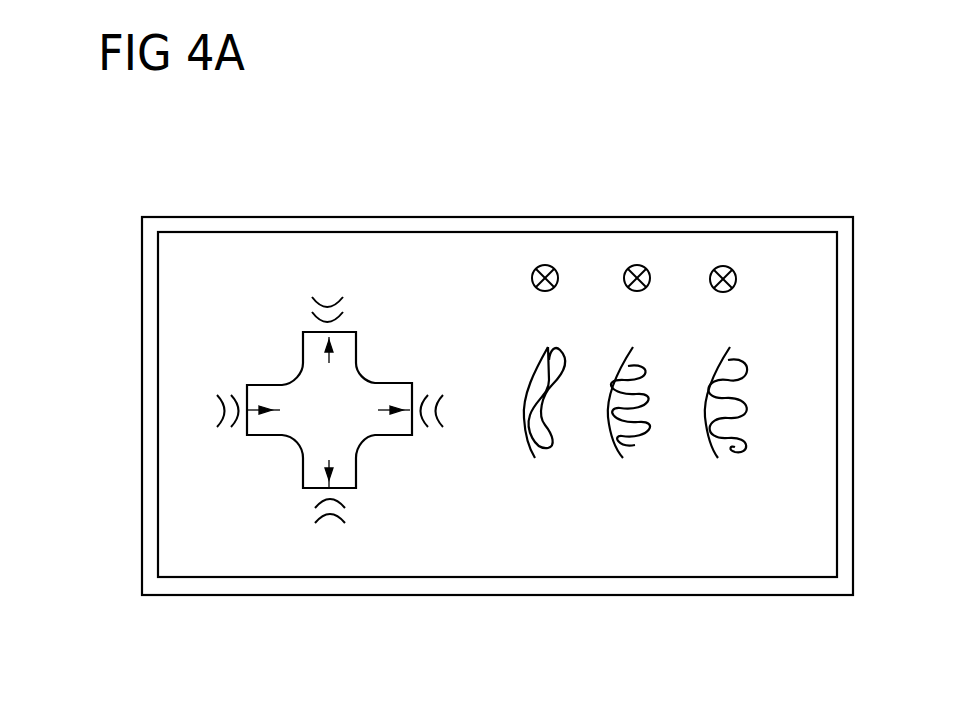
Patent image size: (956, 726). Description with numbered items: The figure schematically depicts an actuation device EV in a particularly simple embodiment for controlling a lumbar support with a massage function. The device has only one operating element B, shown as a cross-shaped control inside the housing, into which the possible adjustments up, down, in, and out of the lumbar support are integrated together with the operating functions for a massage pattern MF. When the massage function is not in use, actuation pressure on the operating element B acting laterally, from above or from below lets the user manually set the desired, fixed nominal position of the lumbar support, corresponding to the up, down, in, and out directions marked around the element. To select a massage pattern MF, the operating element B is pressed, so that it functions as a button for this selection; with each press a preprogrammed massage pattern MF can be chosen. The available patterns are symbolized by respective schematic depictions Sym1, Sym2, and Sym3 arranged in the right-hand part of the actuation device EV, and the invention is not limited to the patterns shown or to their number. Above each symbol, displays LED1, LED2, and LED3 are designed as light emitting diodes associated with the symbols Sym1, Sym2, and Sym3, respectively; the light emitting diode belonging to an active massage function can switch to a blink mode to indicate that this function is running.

The actuation device EV is at (137, 293).
The operating element B is at (305, 433).
The massage pattern MF is at (327, 409).
The up adjustment up is at (348, 323).
The down adjustment down is at (355, 505).
The in adjustment in is at (420, 373).
The out adjustment out is at (242, 443).
The display LED1 is at (542, 265).
The display LED2 is at (634, 265).
The display LED3 is at (725, 266).
The schematic depiction Sym1 is at (550, 467).
The schematic depiction Sym2 is at (635, 467).
The schematic depiction Sym3 is at (737, 467).